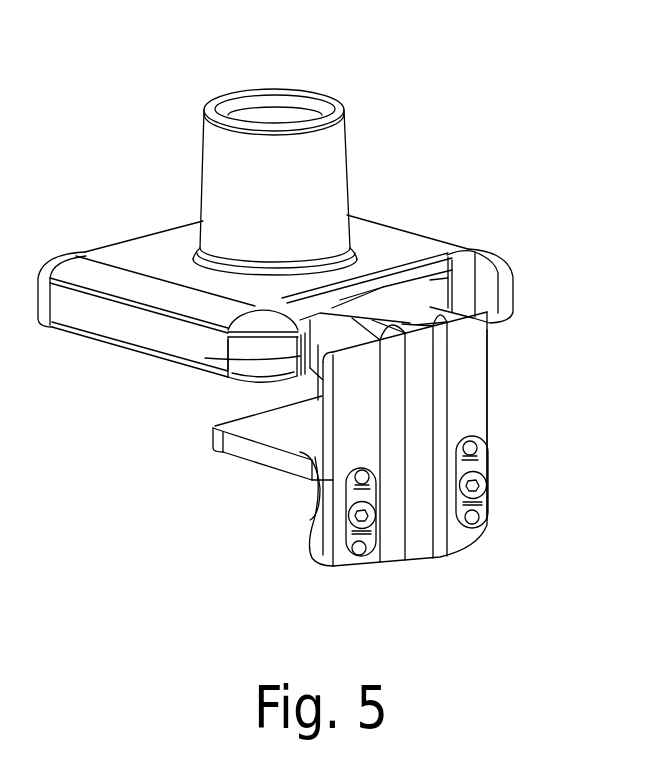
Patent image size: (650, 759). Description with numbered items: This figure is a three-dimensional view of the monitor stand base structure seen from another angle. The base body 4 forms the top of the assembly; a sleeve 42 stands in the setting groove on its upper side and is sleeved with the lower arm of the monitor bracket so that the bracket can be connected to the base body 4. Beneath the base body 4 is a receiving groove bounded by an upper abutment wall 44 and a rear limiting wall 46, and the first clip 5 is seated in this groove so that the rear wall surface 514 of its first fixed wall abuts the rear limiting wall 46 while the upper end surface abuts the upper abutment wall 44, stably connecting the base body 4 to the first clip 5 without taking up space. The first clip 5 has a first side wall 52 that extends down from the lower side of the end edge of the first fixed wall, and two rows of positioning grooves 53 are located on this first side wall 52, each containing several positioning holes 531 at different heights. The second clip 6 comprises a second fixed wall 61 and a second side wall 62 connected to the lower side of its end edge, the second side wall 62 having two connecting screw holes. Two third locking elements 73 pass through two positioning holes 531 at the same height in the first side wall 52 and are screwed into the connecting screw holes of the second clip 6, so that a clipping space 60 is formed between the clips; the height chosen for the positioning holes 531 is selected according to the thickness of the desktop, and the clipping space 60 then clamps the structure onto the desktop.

The base body 4 is at (386, 220).
The sleeve 42 is at (287, 102).
The upper abutment wall 44 is at (322, 313).
The rear limiting wall 46 is at (232, 359).
The first clip 5 is at (445, 435).
The first side wall 52 is at (488, 380).
The positioning groove 53 is at (353, 470).
The positioning hole 531 is at (353, 482).
The rear wall surface 514 is at (303, 382).
The second clip 6 is at (366, 516).
The clipping space 60 is at (290, 416).
The second fixed wall 61 is at (230, 462).
The second side wall 62 is at (315, 518).
The third locking element 73 is at (354, 522).